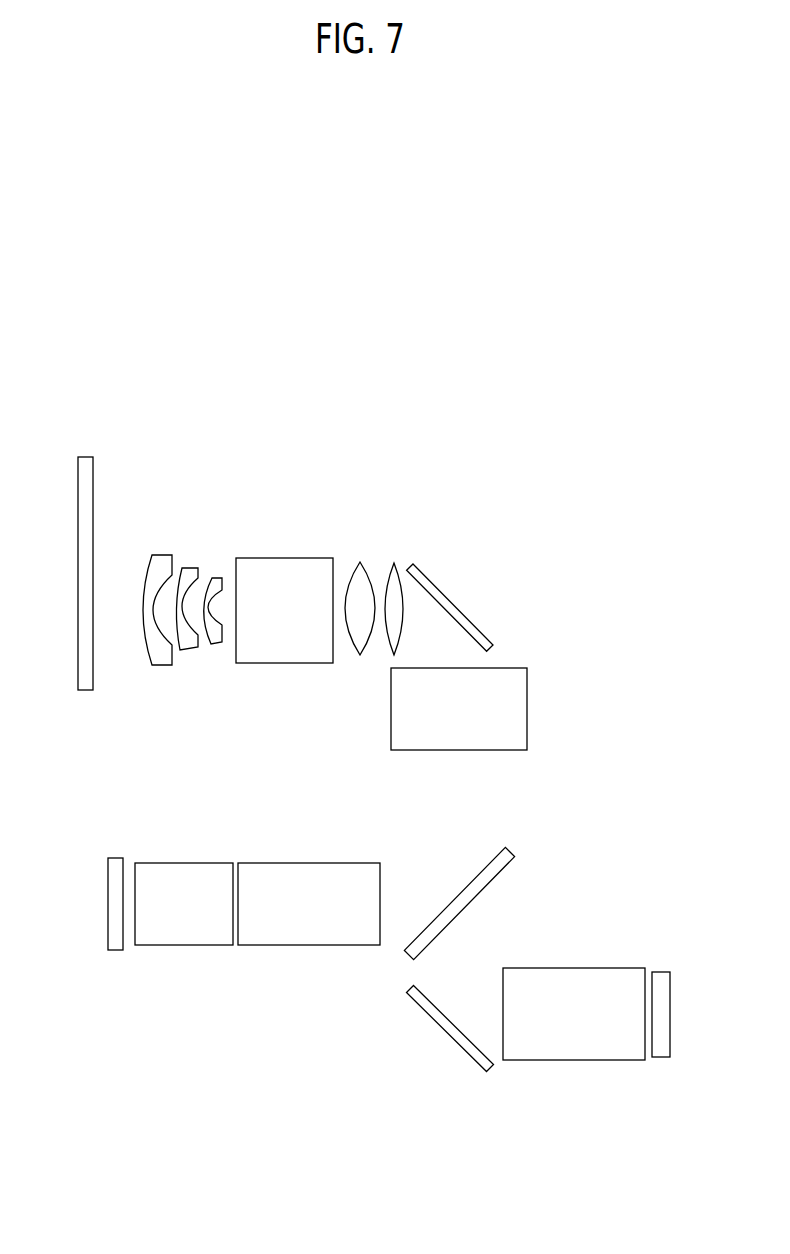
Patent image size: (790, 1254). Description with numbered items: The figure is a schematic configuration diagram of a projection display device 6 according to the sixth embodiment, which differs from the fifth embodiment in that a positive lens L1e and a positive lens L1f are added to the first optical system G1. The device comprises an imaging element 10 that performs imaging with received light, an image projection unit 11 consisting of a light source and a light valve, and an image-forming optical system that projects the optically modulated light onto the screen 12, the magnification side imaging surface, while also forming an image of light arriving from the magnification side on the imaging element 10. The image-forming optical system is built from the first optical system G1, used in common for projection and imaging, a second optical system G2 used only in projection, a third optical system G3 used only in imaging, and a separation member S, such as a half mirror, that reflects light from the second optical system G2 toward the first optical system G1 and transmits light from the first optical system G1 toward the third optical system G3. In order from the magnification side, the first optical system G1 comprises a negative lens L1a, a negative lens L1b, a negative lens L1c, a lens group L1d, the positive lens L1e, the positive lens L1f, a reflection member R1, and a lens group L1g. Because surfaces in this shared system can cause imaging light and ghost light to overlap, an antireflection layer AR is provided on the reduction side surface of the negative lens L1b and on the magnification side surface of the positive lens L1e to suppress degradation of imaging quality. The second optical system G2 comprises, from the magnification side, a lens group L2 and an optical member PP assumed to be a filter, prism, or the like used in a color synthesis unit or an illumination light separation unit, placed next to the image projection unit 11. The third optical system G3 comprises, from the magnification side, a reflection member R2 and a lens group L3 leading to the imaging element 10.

The projection display device 6 is at (653, 289).
The screen 12 is at (87, 622).
The image projection unit 11 is at (113, 928).
The imaging element 10 is at (663, 1033).
The first optical system G1 is at (588, 337).
The negative lens L1a is at (161, 554).
The negative lens L1b is at (193, 567).
The negative lens L1c is at (215, 578).
The lens group L1d is at (292, 557).
The positive lens L1e is at (357, 561).
The positive lens L1f is at (395, 561).
The lens group L1g is at (527, 707).
The reflection member R1 is at (448, 598).
The antireflection layer AR is at (205, 632).
The second optical system G2 is at (328, 1062).
The optical member PP is at (183, 945).
The lens group L2 is at (308, 945).
The separation member S is at (483, 890).
The reflection member R2 is at (452, 1040).
The lens group L3 is at (573, 1060).
The third optical system G3 is at (593, 1157).